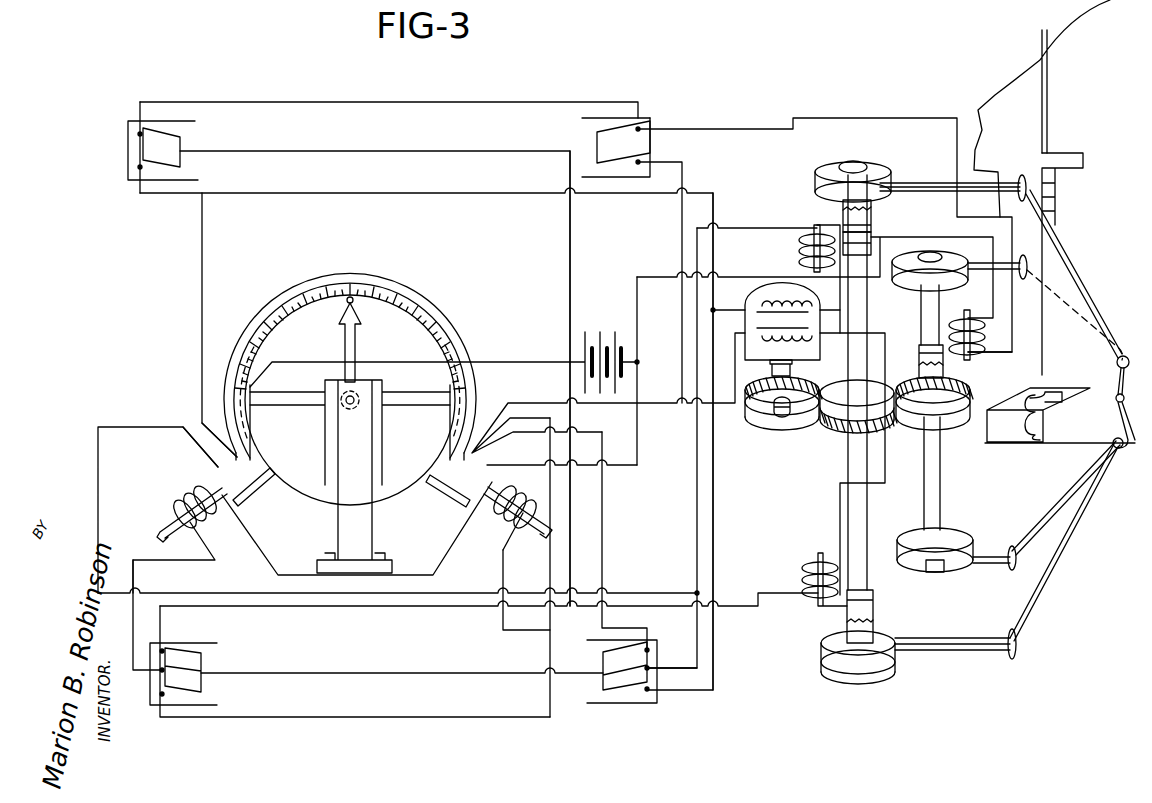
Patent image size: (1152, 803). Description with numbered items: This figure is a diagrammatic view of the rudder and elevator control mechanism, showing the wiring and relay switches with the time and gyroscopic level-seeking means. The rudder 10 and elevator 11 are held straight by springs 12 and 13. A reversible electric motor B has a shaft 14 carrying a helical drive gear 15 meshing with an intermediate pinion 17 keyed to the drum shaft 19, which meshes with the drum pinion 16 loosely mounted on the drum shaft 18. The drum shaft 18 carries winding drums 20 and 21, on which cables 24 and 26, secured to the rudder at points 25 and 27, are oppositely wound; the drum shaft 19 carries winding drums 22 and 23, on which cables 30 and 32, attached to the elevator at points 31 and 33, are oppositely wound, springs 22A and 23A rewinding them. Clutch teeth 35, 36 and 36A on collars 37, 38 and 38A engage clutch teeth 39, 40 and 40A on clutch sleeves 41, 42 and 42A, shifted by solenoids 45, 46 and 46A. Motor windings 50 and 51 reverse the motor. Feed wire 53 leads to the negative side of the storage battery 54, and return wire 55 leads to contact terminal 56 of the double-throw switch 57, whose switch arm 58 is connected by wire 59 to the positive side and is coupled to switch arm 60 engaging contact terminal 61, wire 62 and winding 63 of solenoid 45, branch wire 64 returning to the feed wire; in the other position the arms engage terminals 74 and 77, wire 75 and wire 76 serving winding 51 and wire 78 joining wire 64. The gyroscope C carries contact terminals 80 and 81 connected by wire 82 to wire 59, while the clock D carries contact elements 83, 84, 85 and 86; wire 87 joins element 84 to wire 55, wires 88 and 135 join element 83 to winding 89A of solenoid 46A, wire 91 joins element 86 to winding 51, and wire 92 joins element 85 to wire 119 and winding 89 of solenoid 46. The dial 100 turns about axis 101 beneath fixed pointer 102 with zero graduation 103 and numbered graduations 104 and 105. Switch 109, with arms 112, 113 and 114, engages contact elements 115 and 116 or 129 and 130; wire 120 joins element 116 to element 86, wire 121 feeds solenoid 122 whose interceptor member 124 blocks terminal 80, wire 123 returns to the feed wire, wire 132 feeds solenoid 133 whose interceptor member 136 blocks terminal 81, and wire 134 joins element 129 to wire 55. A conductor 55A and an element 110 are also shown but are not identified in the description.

The rudder 10 is at (1050, 33).
The elevator 11 is at (1132, 450).
The spring 12 is at (1062, 155).
The spring 13 is at (1010, 440).
The motor shaft 14 is at (776, 404).
The helical tooth drive gear 15 is at (772, 428).
The drum pinion 16 is at (945, 430).
The intermediate helical tooth pinion 17 is at (833, 425).
The drum shaft 18 is at (940, 490).
The drum shaft 19 is at (868, 505).
The winding drum 20 is at (918, 295).
The winding drum 21 is at (947, 578).
The winding drum 22 is at (870, 165).
The spring 22A is at (835, 150).
The winding drum 23 is at (823, 640).
The spring 23A is at (870, 684).
The flexible element 24 is at (1068, 290).
The cable attachment point 25 is at (1115, 340).
The cable 26 is at (1025, 528).
The cable attachment point 27 is at (1116, 363).
The cables 30 is at (930, 180).
The cable attachment point 31 is at (1092, 440).
The cables 32 is at (1053, 570).
The cable attachment point 33 is at (1112, 470).
The clutch teeth 35 is at (922, 366).
The clutch teeth 36 is at (874, 625).
The clutch teeth 36A is at (872, 208).
The collar 37 is at (922, 385).
The collar 38 is at (895, 636).
The collar 38A is at (846, 212).
The clutch teeth 39 is at (958, 358).
The clutch teeth 40 is at (874, 615).
The clutch teeth 40A is at (872, 218).
The clutch sleeve 41 is at (928, 348).
The clutch sleeve 42 is at (874, 603).
The clutch sleeve 42A is at (872, 240).
The solenoid 45 is at (985, 338).
The solenoid 46 is at (800, 585).
The solenoid 46A is at (797, 240).
The motor winding 50 is at (780, 300).
The motor winding 51 is at (795, 365).
The feed conductor wire 53 is at (712, 277).
The storage battery 54 is at (600, 335).
The return conductor wire 55 is at (303, 192).
The conductor 55A is at (718, 310).
The contact terminal 56 is at (138, 169).
The switch 57 is at (192, 128).
The switch arm 58 is at (162, 166).
The circuit wire 59 is at (432, 150).
The second switch arm 60 is at (160, 127).
The contact terminal 61 is at (136, 136).
The wire 62 is at (372, 101).
The solenoid winding 63 is at (975, 358).
The branch wire 64 is at (958, 280).
The contact terminal 74 is at (640, 165).
The wire 75 is at (672, 326).
The wire 76 is at (842, 312).
The contact terminal 77 is at (641, 128).
The wire 78 is at (722, 128).
The contact terminal 80 is at (248, 495).
The contact terminal 81 is at (455, 495).
The wire 82 is at (375, 364).
The contact element 83 is at (210, 465).
The contact element 84 is at (215, 443).
The contact element 85 is at (492, 466).
The contact element 86 is at (480, 448).
The circuit wire 87 is at (201, 285).
The circuit wire 88 is at (98, 505).
The solenoid winding 89 is at (822, 606).
The solenoid winding 89A is at (800, 225).
The circuit wire 91 is at (565, 403).
The circuit wire 92 is at (602, 522).
The dial 100 is at (255, 318).
The dial axis 101 is at (345, 405).
The fixed pointer 102 is at (362, 318).
The central zero graduation 103 is at (360, 290).
The numbered graduations 104 is at (295, 290).
The numbered graduations 105 is at (432, 300).
The switch 109 is at (205, 690).
The relay 110 is at (160, 690).
The switch arm 112 is at (172, 650).
The switch arm 113 is at (190, 690).
The switch arm 114 is at (192, 670).
The contact element 115 is at (160, 671).
The contact element 116 is at (164, 697).
The wire 119 is at (398, 610).
The wire 120 is at (352, 718).
The wire 121 is at (150, 562).
The solenoid 122 is at (180, 496).
The wire 123 is at (445, 560).
The interceptor member 124 is at (162, 533).
The contact element 129 is at (650, 648).
The contact element 130 is at (652, 672).
The wire 132 is at (515, 630).
The solenoid 133 is at (497, 518).
The wire 134 is at (736, 642).
The wire 135 is at (697, 545).
The interceptor member 136 is at (530, 525).
The reversible electric motor B is at (757, 320).
The gyroscope C is at (405, 495).
The clock D is at (466, 318).